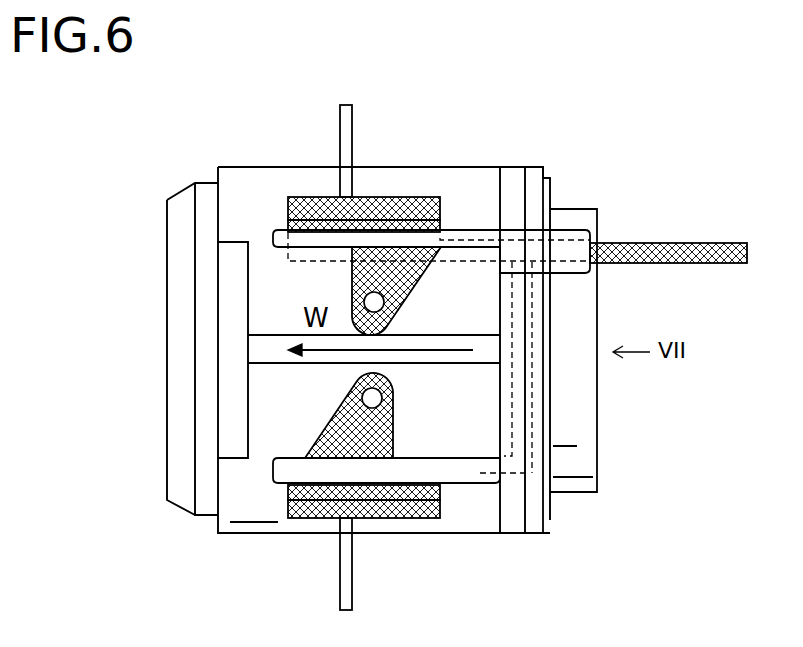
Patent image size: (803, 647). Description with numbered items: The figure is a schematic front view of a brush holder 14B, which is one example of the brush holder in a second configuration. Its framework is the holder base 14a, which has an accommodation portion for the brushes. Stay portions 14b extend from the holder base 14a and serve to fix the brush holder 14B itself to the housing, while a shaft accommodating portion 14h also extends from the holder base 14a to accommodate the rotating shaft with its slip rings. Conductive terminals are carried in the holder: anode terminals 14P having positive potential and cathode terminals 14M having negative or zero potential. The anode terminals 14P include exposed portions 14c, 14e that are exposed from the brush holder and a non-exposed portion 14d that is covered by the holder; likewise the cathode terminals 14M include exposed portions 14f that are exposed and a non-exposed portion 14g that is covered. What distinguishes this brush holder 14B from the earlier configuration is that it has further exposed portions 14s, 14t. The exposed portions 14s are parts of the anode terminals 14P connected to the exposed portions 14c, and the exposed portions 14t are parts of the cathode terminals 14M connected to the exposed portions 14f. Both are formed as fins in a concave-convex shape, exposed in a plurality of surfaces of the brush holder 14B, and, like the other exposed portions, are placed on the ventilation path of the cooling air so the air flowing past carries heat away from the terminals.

The brush holder 14B is at (197, 160).
The holder base 14a is at (298, 197).
The exposed portions 14s is at (335, 197).
The stay portions 14b is at (347, 178).
The exposed portions 14c is at (430, 197).
The non-exposed portion 14d is at (507, 230).
The exposed portions 14e is at (675, 247).
The exposed portions 14f is at (348, 432).
The exposed portions 14t is at (438, 507).
The non-exposed portion 14g is at (512, 473).
The shaft accommodating portion 14h is at (577, 437).
The anode terminals 14P is at (663, 98).
The cathode terminals 14M is at (588, 598).